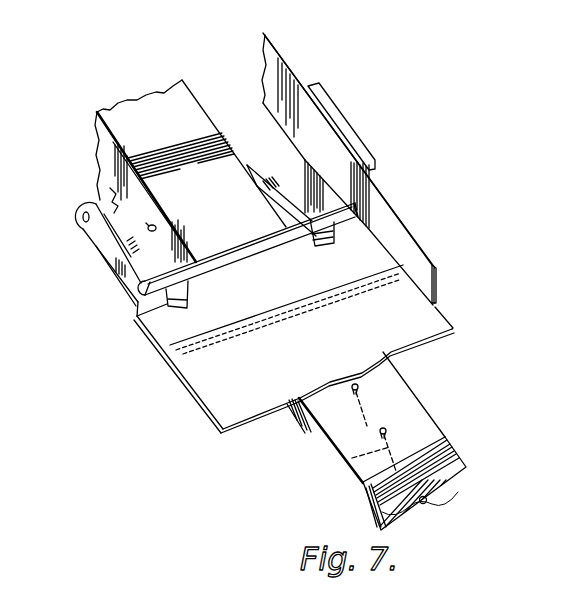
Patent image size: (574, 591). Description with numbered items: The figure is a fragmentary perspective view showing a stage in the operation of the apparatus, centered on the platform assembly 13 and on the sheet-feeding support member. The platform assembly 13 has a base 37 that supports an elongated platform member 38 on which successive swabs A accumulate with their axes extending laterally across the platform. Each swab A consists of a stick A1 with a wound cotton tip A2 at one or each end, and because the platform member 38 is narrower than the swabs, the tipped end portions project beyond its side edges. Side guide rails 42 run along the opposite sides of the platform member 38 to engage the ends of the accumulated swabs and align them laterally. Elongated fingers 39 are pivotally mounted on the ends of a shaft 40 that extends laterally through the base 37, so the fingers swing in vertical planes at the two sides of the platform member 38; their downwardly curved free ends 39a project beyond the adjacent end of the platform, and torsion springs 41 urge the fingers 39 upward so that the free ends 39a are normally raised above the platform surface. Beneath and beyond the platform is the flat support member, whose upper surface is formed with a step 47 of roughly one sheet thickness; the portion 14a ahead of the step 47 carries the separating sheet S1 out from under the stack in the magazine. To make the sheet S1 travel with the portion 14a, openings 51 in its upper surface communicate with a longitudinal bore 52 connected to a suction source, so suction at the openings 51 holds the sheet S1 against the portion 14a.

The platform assembly 13 is at (88, 136).
The base 37 is at (110, 167).
The platform member 38 is at (157, 93).
The fingers 39 is at (128, 255).
The free ends of fingers 39a is at (214, 326).
The shaft 40 is at (80, 216).
The torsion springs 41 is at (148, 228).
The side guide rails 42 is at (381, 218).
The swab A is at (247, 245).
The stick A1 is at (234, 242).
The cotton tip A2 is at (405, 176).
The separating sheet S1 is at (428, 315).
The portion of support member 14a is at (397, 398).
The step 47 is at (433, 446).
The openings 51 is at (381, 433).
The bore 52 is at (352, 458).